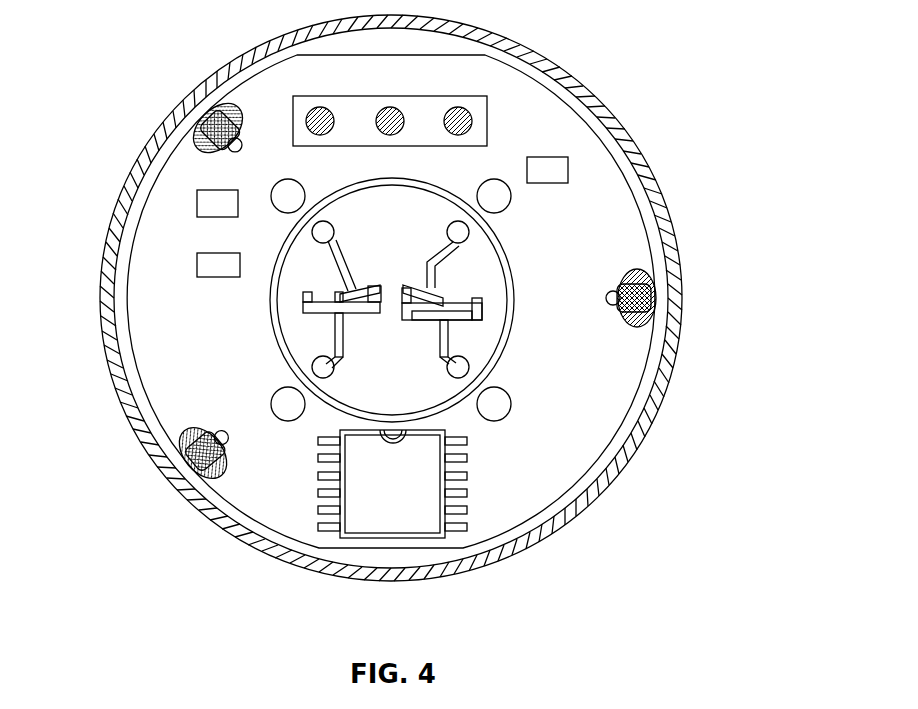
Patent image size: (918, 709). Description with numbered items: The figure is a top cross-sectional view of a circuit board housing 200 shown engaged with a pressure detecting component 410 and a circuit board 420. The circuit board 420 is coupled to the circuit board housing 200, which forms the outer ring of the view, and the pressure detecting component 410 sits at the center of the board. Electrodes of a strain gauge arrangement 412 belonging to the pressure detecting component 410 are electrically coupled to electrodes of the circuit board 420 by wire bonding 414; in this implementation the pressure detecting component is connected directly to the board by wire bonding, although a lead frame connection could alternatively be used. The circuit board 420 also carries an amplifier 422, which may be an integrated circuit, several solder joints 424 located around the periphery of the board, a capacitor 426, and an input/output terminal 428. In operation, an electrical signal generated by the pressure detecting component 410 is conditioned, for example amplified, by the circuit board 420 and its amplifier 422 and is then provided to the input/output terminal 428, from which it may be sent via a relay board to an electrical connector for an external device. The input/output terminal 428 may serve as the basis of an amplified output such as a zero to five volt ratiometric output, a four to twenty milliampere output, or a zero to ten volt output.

The circuit board housing 200 is at (128, 412).
The pressure detecting component 410 is at (289, 328).
The strain gauge arrangement 412 is at (335, 296).
The wire bonding 414 is at (462, 368).
The circuit board 420 is at (580, 461).
The amplifier 422 is at (393, 518).
The solder joints 424 is at (212, 112).
The capacitor 426 is at (208, 205).
The input/output terminal 428 is at (487, 135).